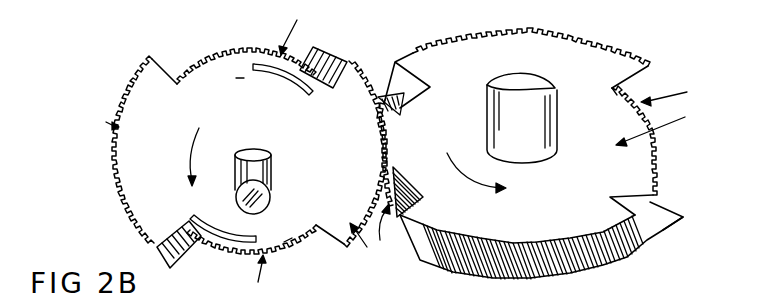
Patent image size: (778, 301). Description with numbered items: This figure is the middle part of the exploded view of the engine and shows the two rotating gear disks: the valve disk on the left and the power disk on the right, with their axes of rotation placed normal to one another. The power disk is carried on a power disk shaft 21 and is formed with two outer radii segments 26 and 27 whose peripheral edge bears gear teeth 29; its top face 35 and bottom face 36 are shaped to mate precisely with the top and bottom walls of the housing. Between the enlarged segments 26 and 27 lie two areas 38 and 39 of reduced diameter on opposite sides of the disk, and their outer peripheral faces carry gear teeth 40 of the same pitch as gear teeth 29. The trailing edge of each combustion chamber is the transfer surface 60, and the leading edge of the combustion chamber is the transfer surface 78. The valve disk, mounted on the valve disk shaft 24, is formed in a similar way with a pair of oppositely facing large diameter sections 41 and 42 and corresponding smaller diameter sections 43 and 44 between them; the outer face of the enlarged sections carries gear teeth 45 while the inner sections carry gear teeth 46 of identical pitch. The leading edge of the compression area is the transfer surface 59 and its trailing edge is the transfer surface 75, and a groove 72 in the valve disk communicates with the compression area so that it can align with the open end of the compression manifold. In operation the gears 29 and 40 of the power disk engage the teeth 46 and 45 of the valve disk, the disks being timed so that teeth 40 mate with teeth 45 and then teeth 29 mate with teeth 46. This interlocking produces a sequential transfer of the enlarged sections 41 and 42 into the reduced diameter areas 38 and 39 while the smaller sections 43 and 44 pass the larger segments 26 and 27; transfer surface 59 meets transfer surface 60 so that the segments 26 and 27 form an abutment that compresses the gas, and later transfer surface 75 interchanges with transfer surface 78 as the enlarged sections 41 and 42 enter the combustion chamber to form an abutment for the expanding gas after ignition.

The power disk shaft 21 is at (540, 87).
The valve disk shaft 24 is at (266, 196).
The outer radii segment 26 is at (592, 62).
The outer radii segment 27 is at (583, 228).
The gear teeth 29 is at (513, 32).
The top face 35 is at (460, 65).
The bottom face 36 is at (533, 275).
The reduced diameter area 38 is at (432, 163).
The reduced diameter area 39 is at (617, 126).
The gear teeth 40 is at (400, 112).
The large diameter section 41 is at (157, 166).
The large diameter section 42 is at (370, 136).
The smaller diameter section 43 is at (240, 76).
The smaller diameter section 44 is at (288, 240).
The gear teeth 45 is at (117, 188).
The gear teeth 46 is at (223, 57).
The transfer surface 59 is at (168, 80).
The transfer surface 60 is at (395, 62).
The groove 72 is at (290, 88).
The transfer surface 75 is at (325, 62).
The transfer surface 78 is at (620, 88).